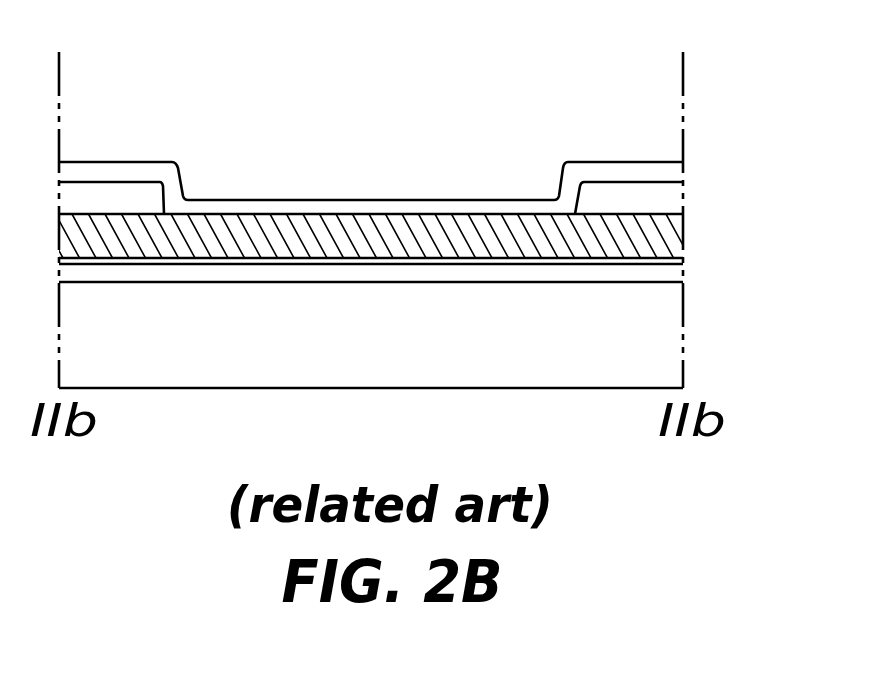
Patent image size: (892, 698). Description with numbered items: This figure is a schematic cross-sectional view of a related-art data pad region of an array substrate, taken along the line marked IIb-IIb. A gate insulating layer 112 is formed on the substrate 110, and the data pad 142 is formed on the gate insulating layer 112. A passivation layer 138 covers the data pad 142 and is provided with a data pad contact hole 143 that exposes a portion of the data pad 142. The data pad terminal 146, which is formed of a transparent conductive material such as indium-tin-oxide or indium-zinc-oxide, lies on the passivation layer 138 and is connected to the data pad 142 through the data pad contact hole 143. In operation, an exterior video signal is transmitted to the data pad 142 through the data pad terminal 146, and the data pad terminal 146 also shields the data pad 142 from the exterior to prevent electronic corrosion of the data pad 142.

The substrate 110 is at (425, 353).
The gate insulating layer 112 is at (668, 274).
The passivation layer 138 is at (668, 201).
The data pad 142 is at (418, 226).
The data pad contact hole 143 is at (287, 122).
The data pad terminal 146 is at (603, 170).